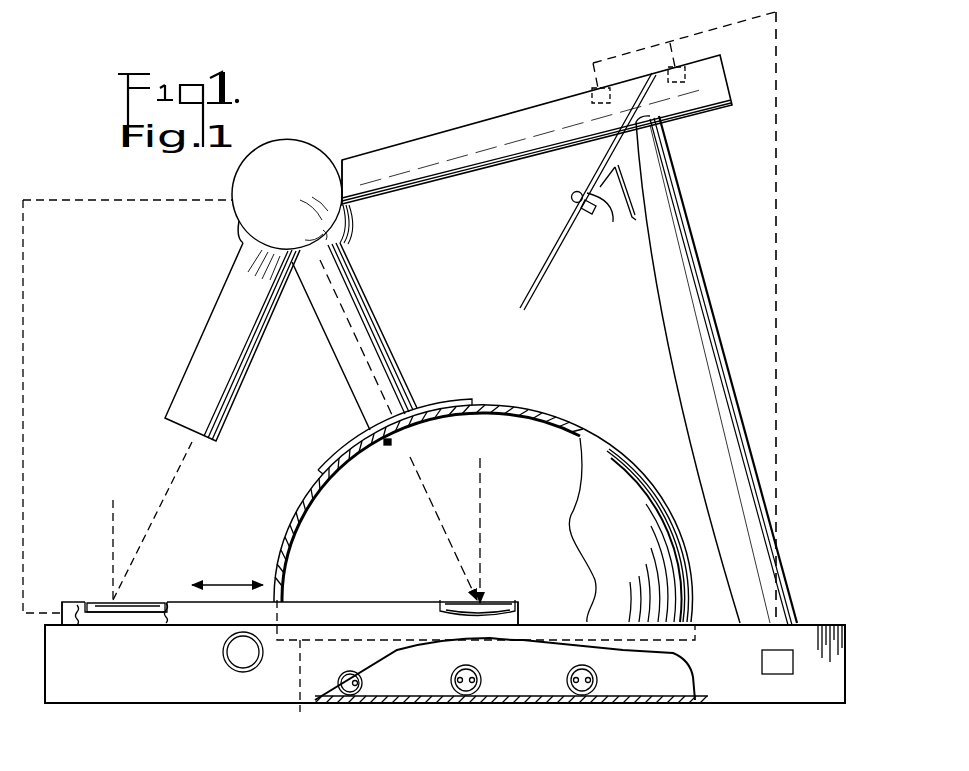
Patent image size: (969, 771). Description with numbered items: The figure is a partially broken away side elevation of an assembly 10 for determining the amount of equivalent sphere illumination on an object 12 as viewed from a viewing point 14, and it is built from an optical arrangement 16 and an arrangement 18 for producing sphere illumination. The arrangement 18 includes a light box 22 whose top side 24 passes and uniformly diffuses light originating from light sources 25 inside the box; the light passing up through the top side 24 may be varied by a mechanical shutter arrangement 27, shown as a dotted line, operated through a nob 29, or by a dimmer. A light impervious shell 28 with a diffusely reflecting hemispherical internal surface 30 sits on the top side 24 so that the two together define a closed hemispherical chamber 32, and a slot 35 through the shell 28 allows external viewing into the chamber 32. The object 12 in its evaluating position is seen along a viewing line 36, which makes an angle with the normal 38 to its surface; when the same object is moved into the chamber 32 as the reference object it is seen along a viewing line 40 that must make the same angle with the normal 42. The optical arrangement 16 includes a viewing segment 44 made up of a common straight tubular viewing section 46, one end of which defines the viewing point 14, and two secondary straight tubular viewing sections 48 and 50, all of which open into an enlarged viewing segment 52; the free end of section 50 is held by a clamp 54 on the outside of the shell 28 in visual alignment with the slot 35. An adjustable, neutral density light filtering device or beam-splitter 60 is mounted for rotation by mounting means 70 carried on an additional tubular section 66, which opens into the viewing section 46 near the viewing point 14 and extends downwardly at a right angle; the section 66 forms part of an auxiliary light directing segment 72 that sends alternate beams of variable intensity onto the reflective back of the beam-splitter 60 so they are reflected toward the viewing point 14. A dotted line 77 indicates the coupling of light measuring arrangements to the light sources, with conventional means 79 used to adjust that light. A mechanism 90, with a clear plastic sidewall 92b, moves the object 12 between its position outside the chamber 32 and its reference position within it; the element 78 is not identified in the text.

The assembly 10 is at (425, 62).
The object 12 is at (100, 600).
The viewing point 14 is at (742, 65).
The optical arrangement 16 is at (790, 72).
The arrangement for producing sphere illumination 18 is at (265, 711).
The light box 22 is at (183, 690).
The top side 24 is at (530, 622).
The light sources 25 is at (460, 687).
The shutter arrangement 27 is at (492, 674).
The light impervious shell 28 is at (600, 460).
The nob 29 is at (222, 662).
The hemispherical internal surface 30 is at (319, 516).
The hemispherical chamber 32 is at (529, 509).
The slot 35 is at (388, 447).
The viewing line 36 is at (185, 496).
The normal 38 is at (113, 535).
The viewing line 40 is at (412, 457).
The normal 42 is at (480, 458).
The viewing segment 44 is at (490, 90).
The common straight tubular viewing section 46 is at (440, 134).
The secondary straight tubular viewing section 48 is at (185, 387).
The secondary straight tubular viewing section 50 is at (337, 332).
The enlarged viewing segment 52 is at (305, 155).
The clamp 54 is at (452, 400).
The adjustable light filtering device 60 is at (545, 282).
The tubular section 66 is at (680, 343).
The mounting means 70 is at (612, 187).
The auxiliary light directing segment 72 is at (795, 518).
The dotted line 77 is at (780, 213).
The platform edge 78 is at (90, 613).
The adjusting means 79 is at (778, 665).
The mechanism 90 is at (174, 592).
The sidewall 92b is at (182, 615).